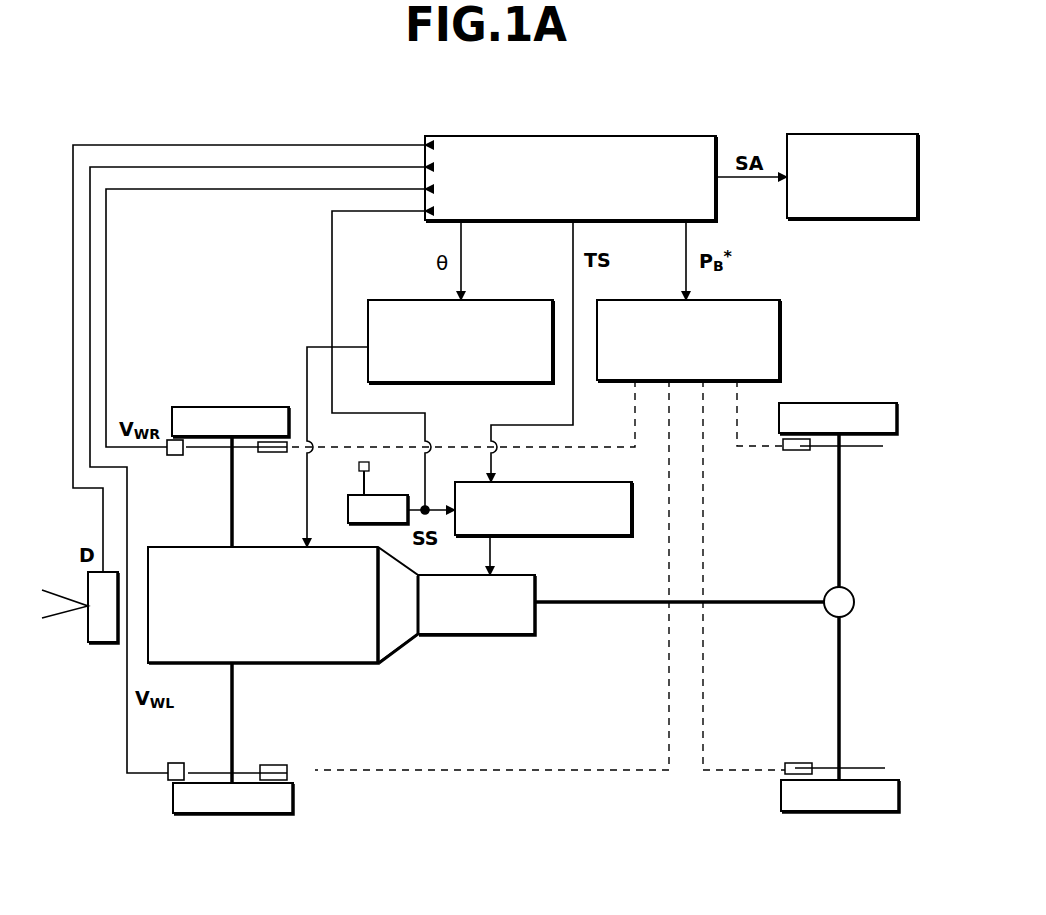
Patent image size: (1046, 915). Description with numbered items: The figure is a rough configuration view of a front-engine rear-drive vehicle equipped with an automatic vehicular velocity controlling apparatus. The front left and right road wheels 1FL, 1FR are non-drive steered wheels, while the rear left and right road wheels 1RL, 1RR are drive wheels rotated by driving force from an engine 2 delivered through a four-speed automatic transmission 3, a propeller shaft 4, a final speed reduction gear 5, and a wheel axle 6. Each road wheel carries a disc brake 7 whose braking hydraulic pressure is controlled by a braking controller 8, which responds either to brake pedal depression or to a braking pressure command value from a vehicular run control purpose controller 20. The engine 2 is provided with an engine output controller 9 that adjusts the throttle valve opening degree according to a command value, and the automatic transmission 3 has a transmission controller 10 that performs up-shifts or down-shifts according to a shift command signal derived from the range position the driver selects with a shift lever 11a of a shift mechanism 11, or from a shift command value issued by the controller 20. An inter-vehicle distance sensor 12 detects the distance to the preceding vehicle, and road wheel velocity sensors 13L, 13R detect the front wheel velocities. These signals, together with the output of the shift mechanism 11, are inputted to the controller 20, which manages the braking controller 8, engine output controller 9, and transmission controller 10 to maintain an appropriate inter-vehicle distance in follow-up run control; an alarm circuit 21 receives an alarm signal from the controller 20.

The front right road wheel 1FR is at (203, 407).
The front left road wheel 1FL is at (279, 815).
The rear right road wheel 1RR is at (849, 403).
The rear left road wheel 1RL is at (843, 813).
The engine 2 is at (357, 664).
The four-speed automatic transmission 3 is at (487, 636).
The propeller shaft 4 is at (742, 602).
The final speed reduction gear 5 is at (855, 602).
The wheel axle 6 is at (840, 578).
The disc brake 7 is at (250, 451).
The braking controller 8 is at (738, 300).
The engine output controller 9 is at (497, 300).
The automatic transmission controller 10 is at (612, 537).
The shift mechanism 11 is at (376, 495).
The shift lever 11a is at (348, 507).
The inter-vehicle distance sensor 12 is at (98, 643).
The right road wheel velocity sensor 13R is at (183, 456).
The left road wheel velocity sensor 13L is at (168, 781).
The vehicular run control purpose controller 20 is at (683, 136).
The alarm circuit 21 is at (887, 134).